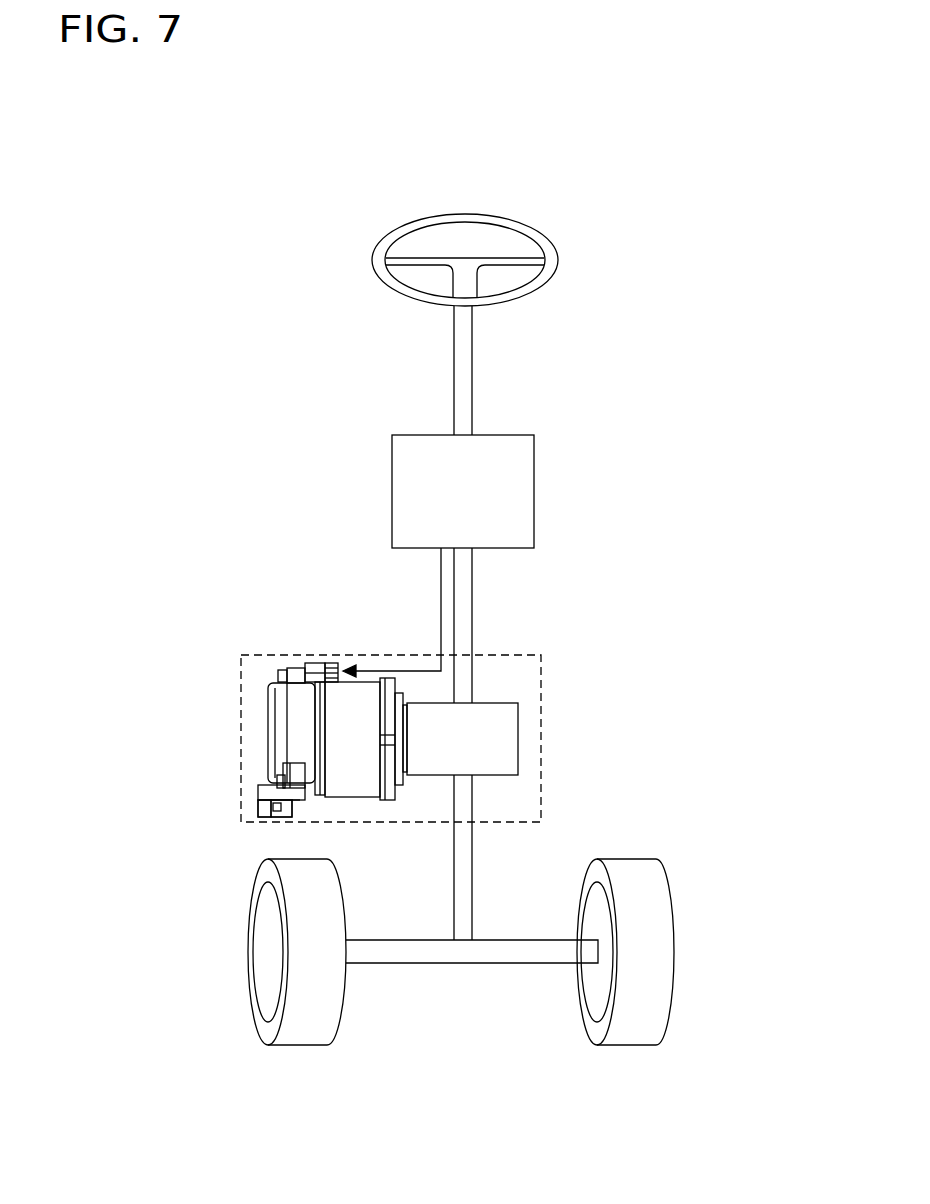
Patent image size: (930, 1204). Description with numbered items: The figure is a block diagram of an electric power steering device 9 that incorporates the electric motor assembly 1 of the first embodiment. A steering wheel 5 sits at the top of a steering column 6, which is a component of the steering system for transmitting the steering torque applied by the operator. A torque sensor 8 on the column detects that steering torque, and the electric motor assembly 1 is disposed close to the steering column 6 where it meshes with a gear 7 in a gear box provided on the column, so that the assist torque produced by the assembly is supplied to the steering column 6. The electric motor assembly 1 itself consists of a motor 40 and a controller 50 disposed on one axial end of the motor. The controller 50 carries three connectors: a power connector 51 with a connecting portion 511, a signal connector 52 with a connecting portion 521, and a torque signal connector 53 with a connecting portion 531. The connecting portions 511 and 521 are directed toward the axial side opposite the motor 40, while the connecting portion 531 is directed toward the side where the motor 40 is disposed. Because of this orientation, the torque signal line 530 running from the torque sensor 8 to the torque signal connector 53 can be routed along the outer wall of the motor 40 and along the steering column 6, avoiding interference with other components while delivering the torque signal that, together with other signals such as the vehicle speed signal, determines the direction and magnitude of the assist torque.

The electric motor assembly 1 is at (263, 729).
The steering wheel 5 is at (465, 212).
The steering column 6 is at (534, 492).
The gear 7 is at (518, 742).
The torque sensor 8 is at (474, 600).
The electric power steering device 9 is at (541, 705).
The motor 40 is at (362, 788).
The controller 50 is at (296, 660).
The power connector 51 is at (260, 820).
The signal connector 52 is at (275, 818).
The torque signal connector 53 is at (328, 665).
The connecting portion 511 is at (258, 792).
The connecting portion 521 is at (260, 808).
The torque signal line 530 is at (441, 584).
The connecting portion 531 is at (339, 668).